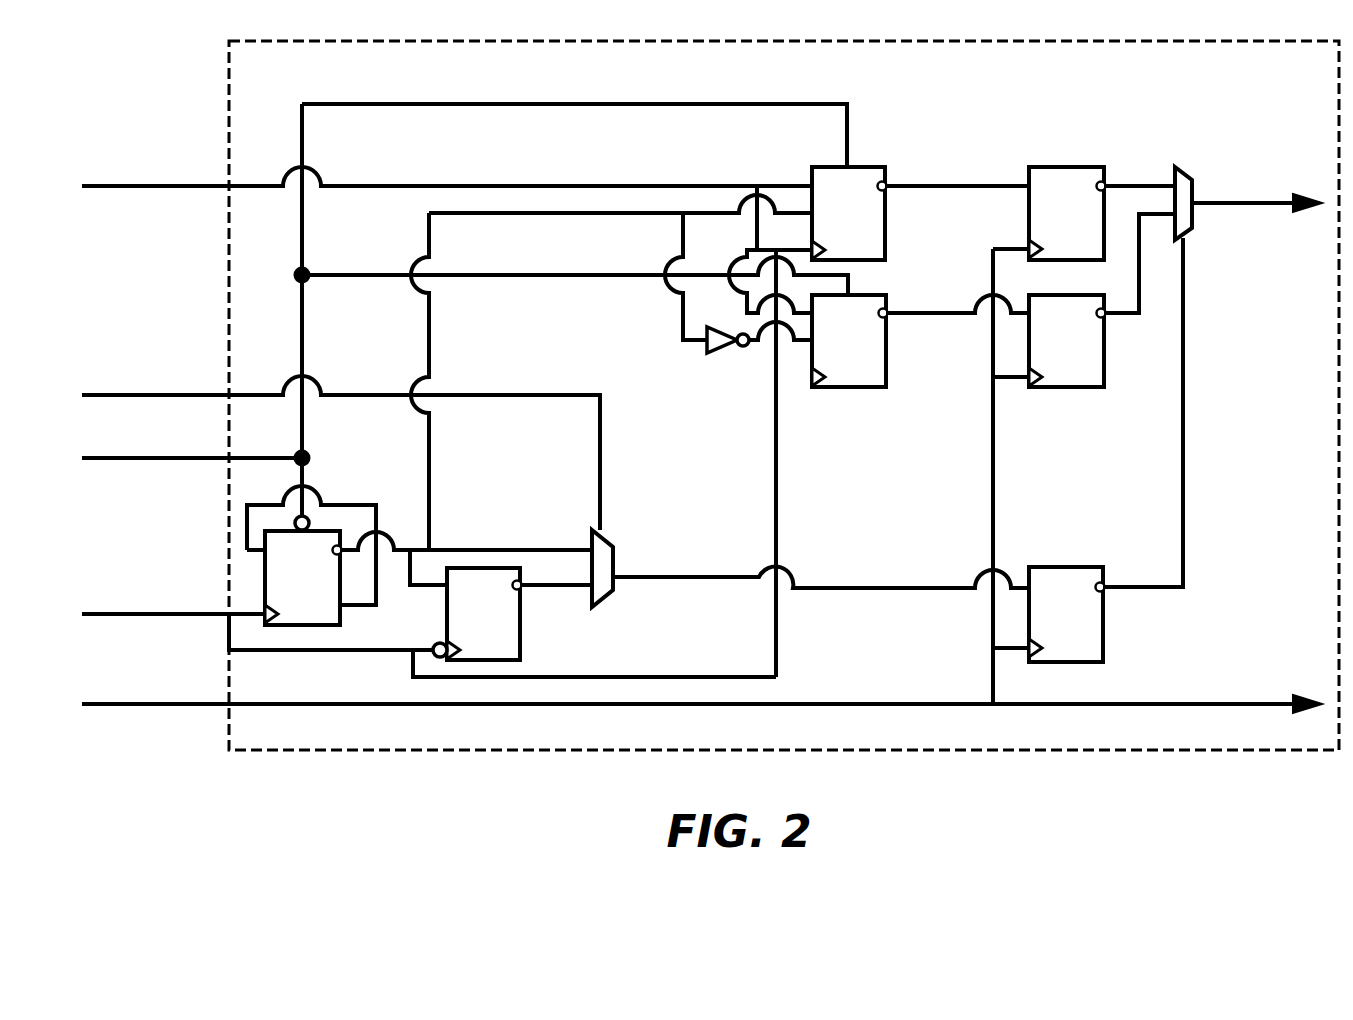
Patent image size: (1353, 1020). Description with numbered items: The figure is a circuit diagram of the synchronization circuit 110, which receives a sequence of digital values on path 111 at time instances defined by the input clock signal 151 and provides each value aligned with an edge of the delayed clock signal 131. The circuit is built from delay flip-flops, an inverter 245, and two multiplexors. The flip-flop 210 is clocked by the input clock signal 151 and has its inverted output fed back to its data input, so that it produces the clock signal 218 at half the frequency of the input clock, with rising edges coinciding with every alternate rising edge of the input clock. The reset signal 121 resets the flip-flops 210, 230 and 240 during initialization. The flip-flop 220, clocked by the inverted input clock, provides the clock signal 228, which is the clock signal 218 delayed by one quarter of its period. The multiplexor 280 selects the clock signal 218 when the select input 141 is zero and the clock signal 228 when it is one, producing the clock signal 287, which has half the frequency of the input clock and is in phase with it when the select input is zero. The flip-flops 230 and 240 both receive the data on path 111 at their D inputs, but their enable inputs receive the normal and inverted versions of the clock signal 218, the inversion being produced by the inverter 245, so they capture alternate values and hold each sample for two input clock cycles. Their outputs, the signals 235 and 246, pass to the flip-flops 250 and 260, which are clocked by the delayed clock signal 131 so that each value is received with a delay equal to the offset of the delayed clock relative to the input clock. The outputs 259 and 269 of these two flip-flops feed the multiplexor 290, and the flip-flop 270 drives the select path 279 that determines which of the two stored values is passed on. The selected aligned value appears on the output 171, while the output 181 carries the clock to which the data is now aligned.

The synchronization circuit 110 is at (1190, 104).
The data path 111 is at (130, 188).
The reset signal 121 is at (120, 462).
The delayed clock signal 131 is at (120, 707).
The select input 141 is at (125, 398).
The input clock signal 151 is at (120, 617).
The output path 171 is at (1285, 197).
The output clock path 181 is at (1283, 697).
The flip-flop 210 is at (279, 593).
The clock signal 218 is at (492, 548).
The flip-flop 220 is at (460, 629).
The clock signal 228 is at (578, 588).
The flip-flop 230 is at (825, 228).
The output signal 235 is at (938, 185).
The flip-flop 240 is at (826, 355).
The inverter 245 is at (712, 355).
The output signal 246 is at (932, 311).
The flip-flop 250 is at (1043, 228).
The output signal 259 is at (1133, 183).
The flip-flop 260 is at (1043, 355).
The output signal 269 is at (1130, 315).
The flip-flop 270 is at (1043, 629).
The select path 279 is at (1185, 468).
The multiplexor 280 is at (613, 545).
The clock signal 287 is at (855, 585).
The multiplexor 290 is at (1195, 177).